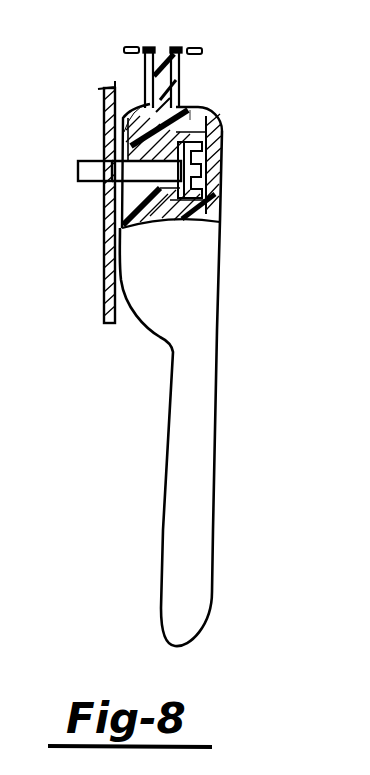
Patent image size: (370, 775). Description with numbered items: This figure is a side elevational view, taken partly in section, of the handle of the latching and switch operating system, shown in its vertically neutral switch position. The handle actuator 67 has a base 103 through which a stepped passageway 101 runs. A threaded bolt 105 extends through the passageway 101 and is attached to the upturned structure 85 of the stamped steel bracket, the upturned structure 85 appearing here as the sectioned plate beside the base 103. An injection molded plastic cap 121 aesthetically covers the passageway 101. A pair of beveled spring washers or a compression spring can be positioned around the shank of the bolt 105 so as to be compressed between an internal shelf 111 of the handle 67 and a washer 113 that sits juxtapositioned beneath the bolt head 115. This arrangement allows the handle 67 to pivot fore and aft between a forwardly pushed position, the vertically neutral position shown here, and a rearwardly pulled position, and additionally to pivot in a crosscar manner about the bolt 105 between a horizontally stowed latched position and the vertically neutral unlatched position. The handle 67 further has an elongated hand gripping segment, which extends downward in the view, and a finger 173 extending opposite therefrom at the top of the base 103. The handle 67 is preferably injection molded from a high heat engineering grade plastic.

The handle actuator 67 is at (130, 452).
The upturned structure 85 is at (103, 133).
The stepped passageway 101 is at (196, 101).
The base 103 is at (203, 257).
The threaded bolt 105 is at (125, 171).
The internal shelf 111 is at (141, 108).
The washer 113 is at (218, 197).
The bolt head 115 is at (215, 112).
The plastic cap 121 is at (222, 156).
The finger 173 is at (160, 47).